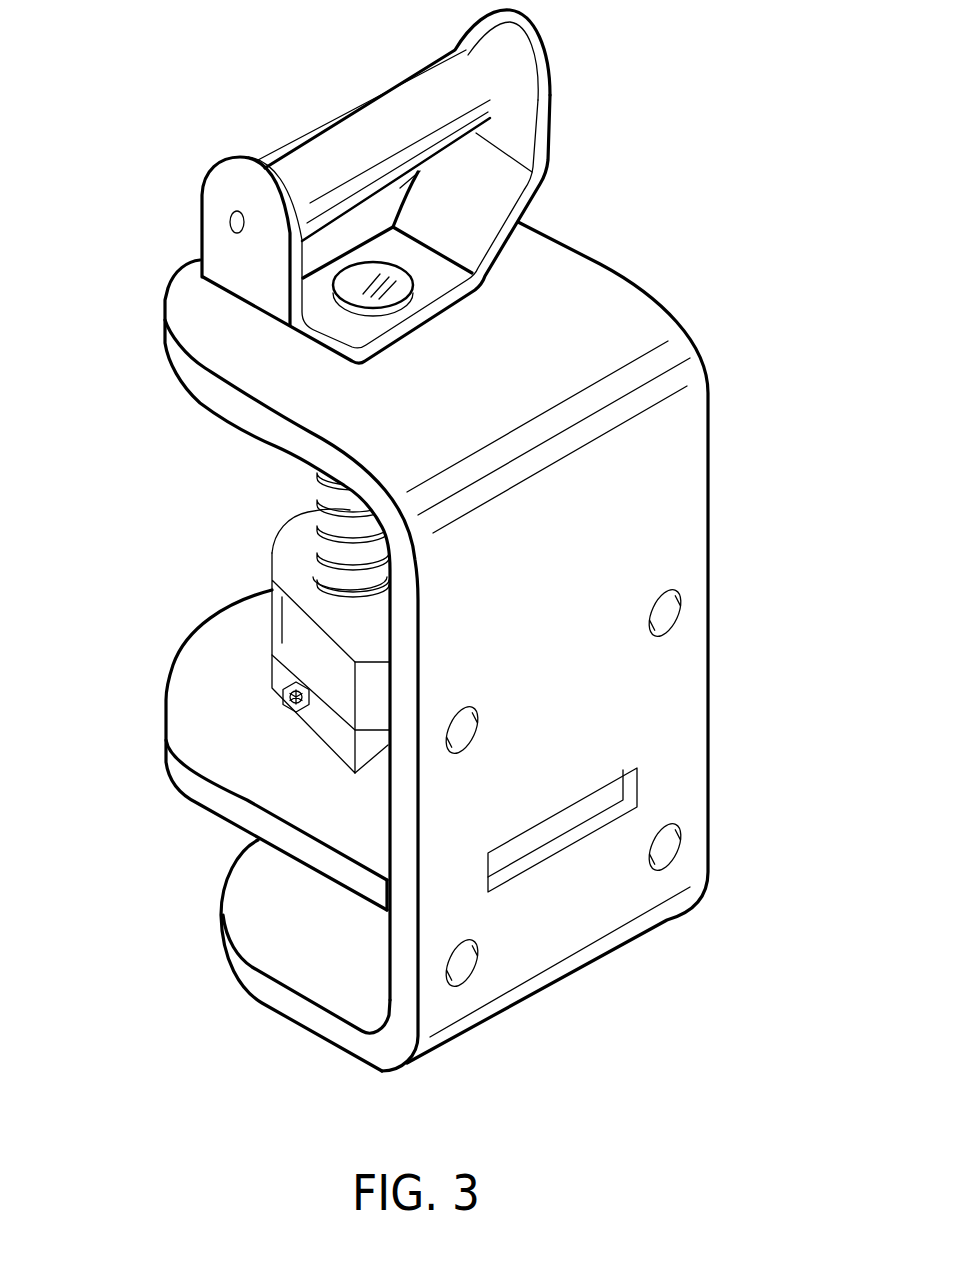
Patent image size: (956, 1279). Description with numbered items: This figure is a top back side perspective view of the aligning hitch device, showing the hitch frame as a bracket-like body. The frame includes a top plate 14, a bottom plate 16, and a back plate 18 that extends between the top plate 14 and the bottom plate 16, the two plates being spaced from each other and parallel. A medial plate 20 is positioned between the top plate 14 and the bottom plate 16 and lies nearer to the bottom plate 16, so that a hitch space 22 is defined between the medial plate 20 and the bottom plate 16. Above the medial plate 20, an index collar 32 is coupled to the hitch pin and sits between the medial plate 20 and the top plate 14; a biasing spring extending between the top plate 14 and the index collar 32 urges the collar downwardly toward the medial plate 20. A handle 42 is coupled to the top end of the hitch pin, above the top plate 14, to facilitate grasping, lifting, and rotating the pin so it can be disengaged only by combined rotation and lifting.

The top plate 14 is at (563, 285).
The bottom plate 16 is at (283, 965).
The back plate 18 is at (668, 510).
The medial plate 20 is at (193, 697).
The hitch space 22 is at (262, 897).
The index collar 32 is at (290, 560).
The handle 42 is at (393, 107).